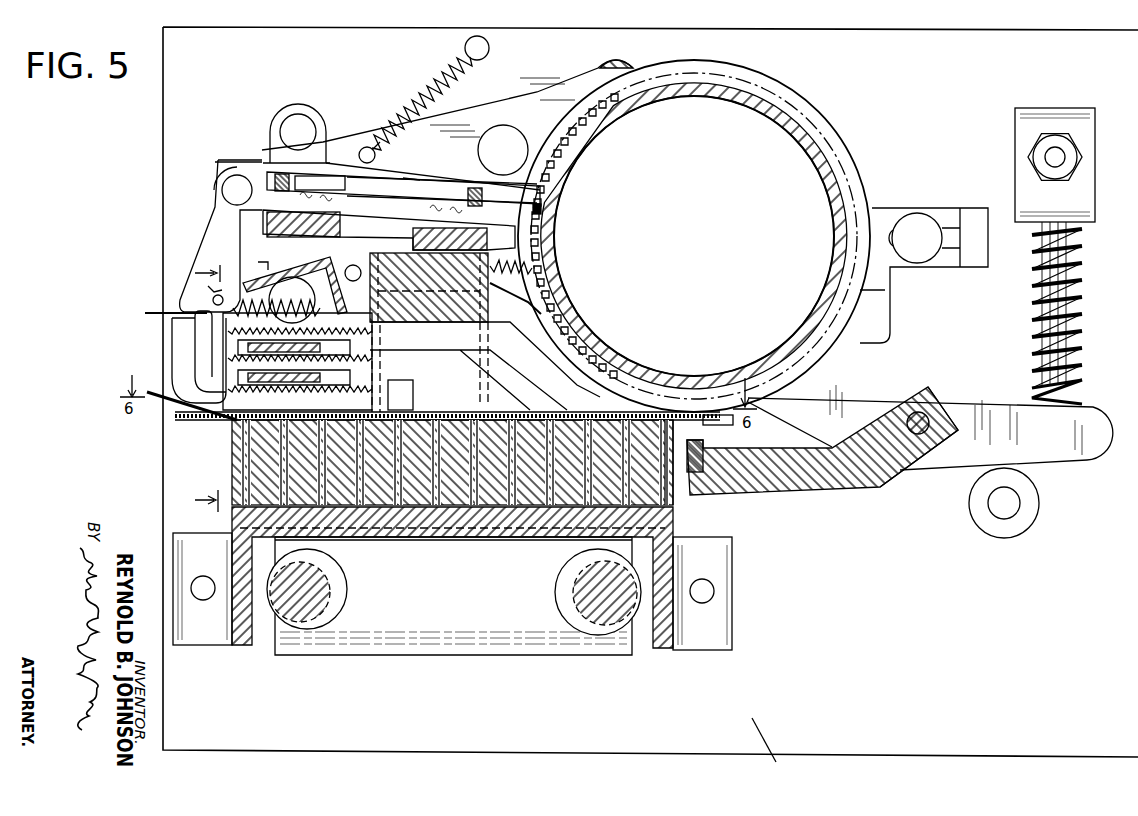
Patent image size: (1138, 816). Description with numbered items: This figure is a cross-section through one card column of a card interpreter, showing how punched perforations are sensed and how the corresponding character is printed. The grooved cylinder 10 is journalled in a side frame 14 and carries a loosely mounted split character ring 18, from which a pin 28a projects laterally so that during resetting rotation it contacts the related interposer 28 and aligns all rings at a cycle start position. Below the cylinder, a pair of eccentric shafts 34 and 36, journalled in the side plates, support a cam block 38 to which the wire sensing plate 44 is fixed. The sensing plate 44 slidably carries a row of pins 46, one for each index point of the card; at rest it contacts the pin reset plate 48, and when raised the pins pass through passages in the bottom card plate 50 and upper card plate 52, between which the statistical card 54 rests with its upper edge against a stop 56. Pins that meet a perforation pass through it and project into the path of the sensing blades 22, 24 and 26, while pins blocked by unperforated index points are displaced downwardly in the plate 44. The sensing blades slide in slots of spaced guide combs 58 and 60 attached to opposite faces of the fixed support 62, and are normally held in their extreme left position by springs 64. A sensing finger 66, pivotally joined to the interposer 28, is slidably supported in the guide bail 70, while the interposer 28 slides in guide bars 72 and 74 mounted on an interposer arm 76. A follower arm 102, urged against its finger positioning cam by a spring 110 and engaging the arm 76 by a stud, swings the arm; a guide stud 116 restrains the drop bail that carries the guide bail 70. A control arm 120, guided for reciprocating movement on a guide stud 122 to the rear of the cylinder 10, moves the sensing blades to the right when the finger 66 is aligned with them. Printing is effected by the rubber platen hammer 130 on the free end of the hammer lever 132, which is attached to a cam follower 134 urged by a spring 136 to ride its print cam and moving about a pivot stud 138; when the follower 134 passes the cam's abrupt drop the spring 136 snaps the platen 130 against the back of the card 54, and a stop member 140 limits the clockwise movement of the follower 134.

The grooved cylinder 10 is at (742, 102).
The side frame 14 is at (776, 750).
The split character ring 18 is at (762, 82).
The sensing blade 22 is at (561, 383).
The sensing blade 24 is at (466, 394).
The sensing blade 26 is at (381, 410).
The interposer 28 is at (372, 200).
The pin 28a is at (545, 206).
The eccentric shaft 34 is at (285, 600).
The eccentric shaft 36 is at (620, 602).
The cam block 38 is at (490, 625).
The wire sensing plate 44 is at (236, 455).
The pin 46 is at (665, 490).
The pin reset plate 48 is at (424, 520).
The bottom card plate 50 is at (215, 425).
The upper card plate 52 is at (152, 390).
The statistical card 54 is at (178, 428).
The stop 56 is at (735, 425).
The guide comb 58 is at (488, 296).
The guide comb 60 is at (335, 312).
The fixed support 62 is at (445, 300).
The spring 64 is at (375, 346).
The sensing finger 66 is at (215, 229).
The guide bail 70 is at (312, 268).
The guide bar 72 is at (330, 186).
The guide bar 74 is at (430, 190).
The interposer arm 76 is at (405, 178).
The follower arm 102 is at (462, 130).
The spring 110 is at (425, 92).
The guide stud 116 is at (292, 128).
The control arm 120 is at (886, 208).
The guide stud 122 is at (922, 228).
The rubber platen hammer 130 is at (762, 480).
The hammer lever 132 is at (876, 488).
The cam follower 134 is at (946, 388).
The spring 136 is at (1082, 288).
The pivot stud 138 is at (927, 418).
The stop member 140 is at (1032, 510).